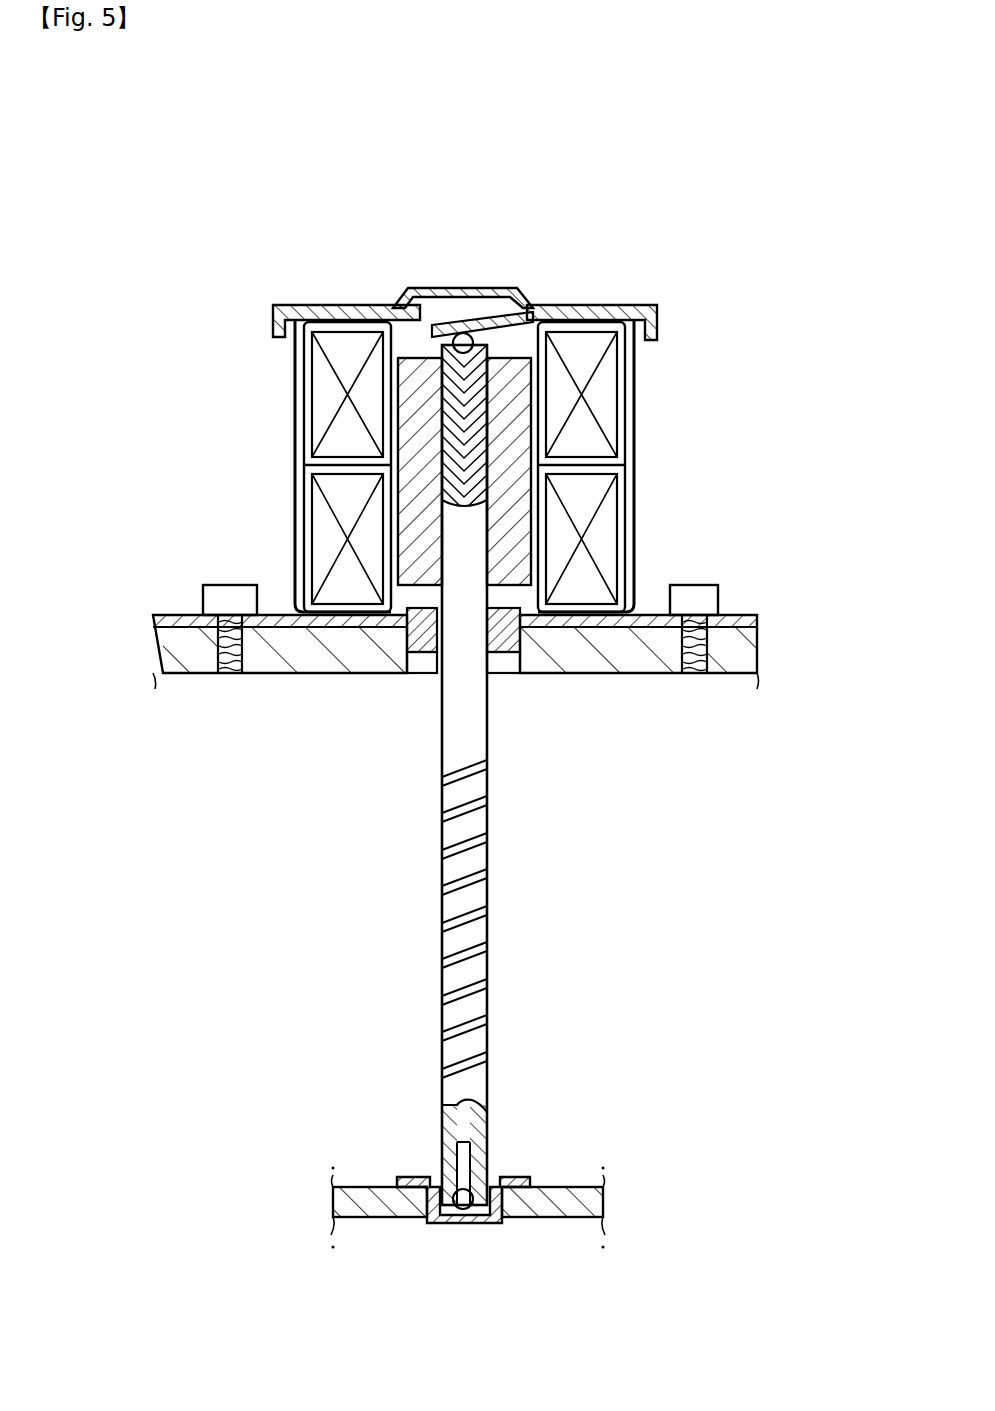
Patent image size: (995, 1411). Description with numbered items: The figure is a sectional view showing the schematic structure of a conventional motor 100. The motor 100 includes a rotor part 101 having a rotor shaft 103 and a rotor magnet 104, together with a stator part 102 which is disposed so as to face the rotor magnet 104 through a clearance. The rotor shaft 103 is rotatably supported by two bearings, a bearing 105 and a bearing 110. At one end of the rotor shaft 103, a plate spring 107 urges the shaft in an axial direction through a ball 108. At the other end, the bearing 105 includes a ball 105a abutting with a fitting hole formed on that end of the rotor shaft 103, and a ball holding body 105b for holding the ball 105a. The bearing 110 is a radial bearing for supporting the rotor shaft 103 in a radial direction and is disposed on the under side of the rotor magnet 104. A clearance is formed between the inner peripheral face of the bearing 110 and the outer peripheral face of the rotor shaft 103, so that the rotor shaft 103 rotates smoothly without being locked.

The motor 100 is at (712, 766).
The rotor part 101 is at (163, 392).
The stator part 102 is at (640, 447).
The rotor shaft 103 is at (455, 560).
The rotor magnet 104 is at (420, 432).
The bearing 105 is at (468, 1276).
The ball 105a is at (454, 1228).
The ball holding body 105b is at (433, 1230).
The plate spring 107 is at (442, 340).
The ball 108 is at (400, 315).
The bearing 110 is at (428, 662).